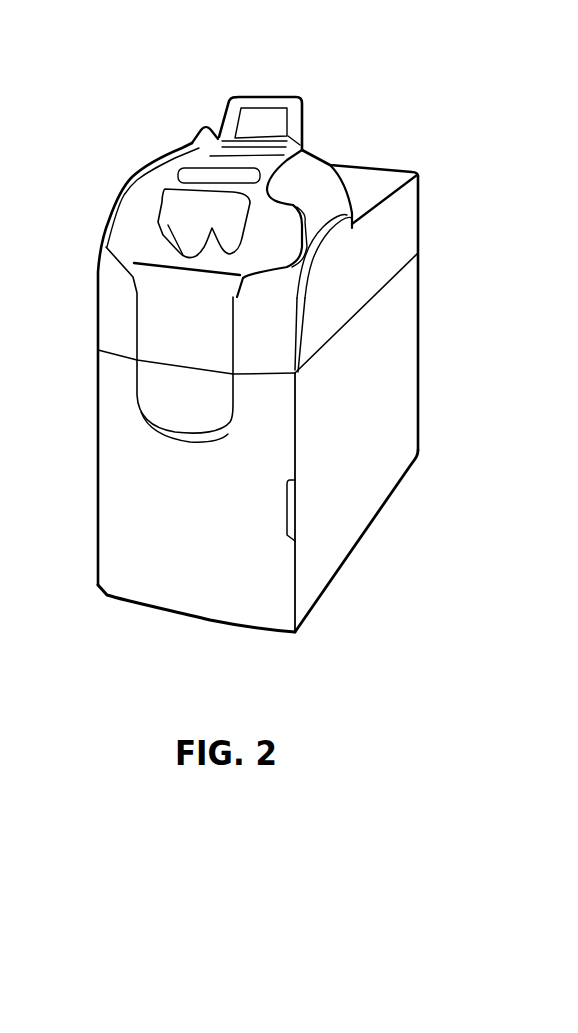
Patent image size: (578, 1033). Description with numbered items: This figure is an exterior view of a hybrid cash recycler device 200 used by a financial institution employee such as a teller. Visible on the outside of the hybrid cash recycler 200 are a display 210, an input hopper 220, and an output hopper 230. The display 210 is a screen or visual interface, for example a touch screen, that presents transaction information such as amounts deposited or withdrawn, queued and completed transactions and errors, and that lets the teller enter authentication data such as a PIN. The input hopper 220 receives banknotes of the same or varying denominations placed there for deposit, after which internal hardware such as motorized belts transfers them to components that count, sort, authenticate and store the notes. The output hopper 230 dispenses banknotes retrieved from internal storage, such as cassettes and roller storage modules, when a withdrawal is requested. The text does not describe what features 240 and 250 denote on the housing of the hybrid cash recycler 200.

The hybrid cash recycler device 200 is at (330, 102).
The display 210 is at (257, 117).
The input hopper 220 is at (195, 222).
The output hopper 230 is at (257, 155).
The latch 240 is at (317, 487).
The side wall 250 is at (383, 410).